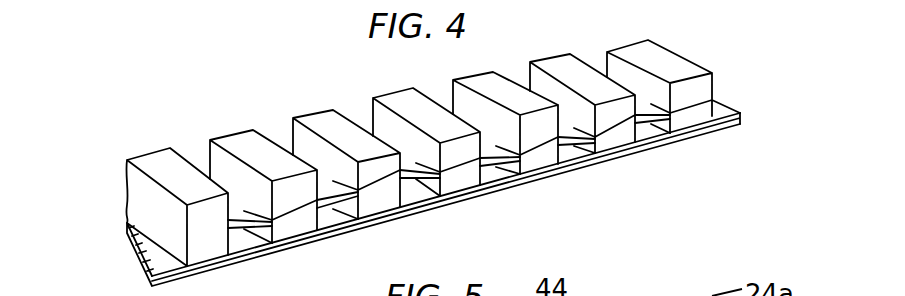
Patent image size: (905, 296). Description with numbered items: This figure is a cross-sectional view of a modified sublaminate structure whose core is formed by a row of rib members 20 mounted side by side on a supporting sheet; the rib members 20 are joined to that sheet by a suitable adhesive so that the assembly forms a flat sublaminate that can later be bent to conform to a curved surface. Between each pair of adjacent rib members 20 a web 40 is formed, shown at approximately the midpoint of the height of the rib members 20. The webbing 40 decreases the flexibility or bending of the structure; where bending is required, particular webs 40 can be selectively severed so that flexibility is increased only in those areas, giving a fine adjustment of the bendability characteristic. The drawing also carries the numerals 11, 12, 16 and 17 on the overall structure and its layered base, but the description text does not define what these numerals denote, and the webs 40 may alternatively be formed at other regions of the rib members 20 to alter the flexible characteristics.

The assembly 11 is at (713, 87).
The base plate 12 is at (130, 234).
The rail layer 16 is at (690, 119).
The rail layer 17 is at (575, 153).
The rib member 20 is at (238, 130).
The webbing 40 is at (244, 228).